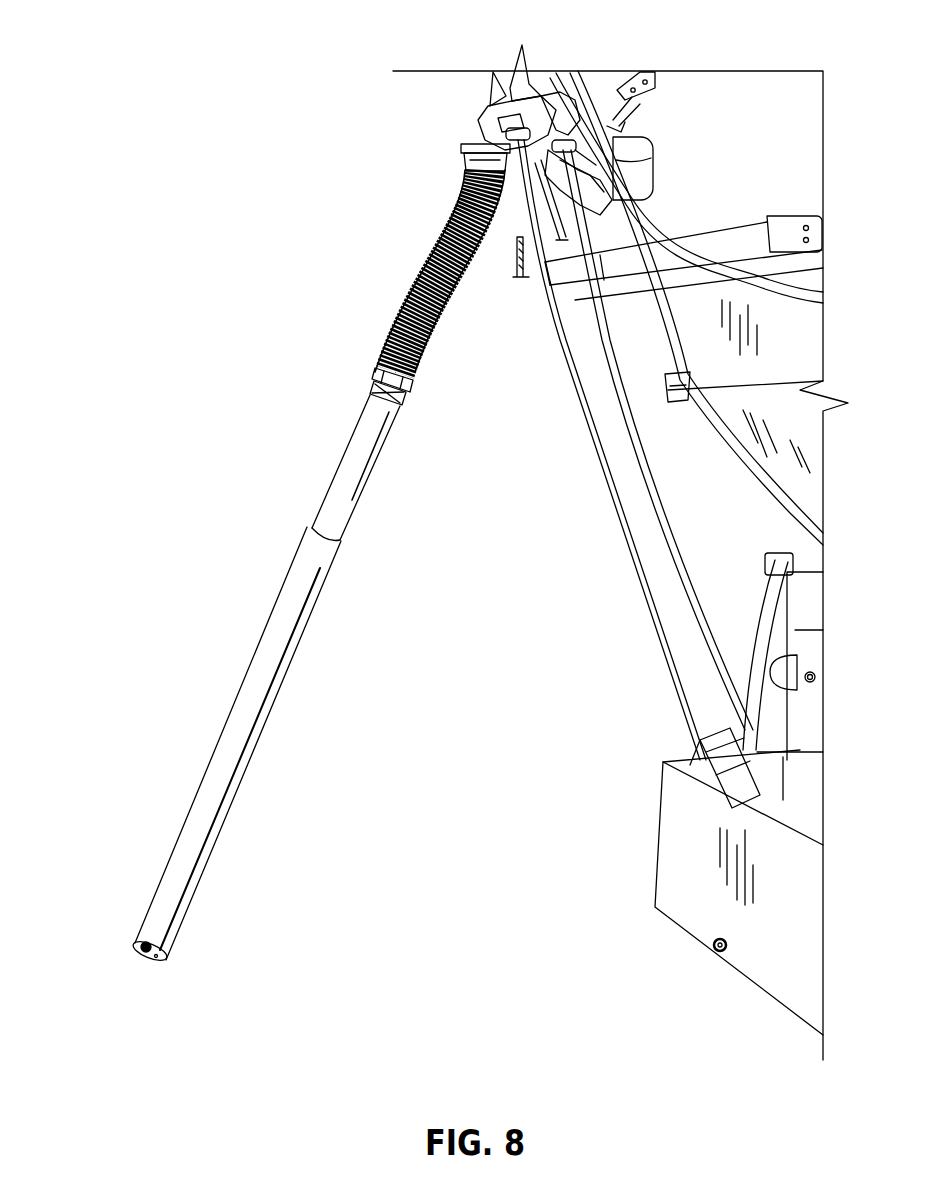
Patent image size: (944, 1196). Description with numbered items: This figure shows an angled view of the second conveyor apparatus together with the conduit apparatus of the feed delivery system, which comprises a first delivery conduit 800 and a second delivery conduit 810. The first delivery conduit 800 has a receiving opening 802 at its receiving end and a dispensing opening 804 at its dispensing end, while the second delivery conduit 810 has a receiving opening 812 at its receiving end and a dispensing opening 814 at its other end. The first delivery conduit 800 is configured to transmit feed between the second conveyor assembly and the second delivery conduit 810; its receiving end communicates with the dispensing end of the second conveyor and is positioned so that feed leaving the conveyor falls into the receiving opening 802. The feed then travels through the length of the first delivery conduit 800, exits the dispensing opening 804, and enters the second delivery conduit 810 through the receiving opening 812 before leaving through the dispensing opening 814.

The first delivery conduit 800 is at (405, 298).
The receiving opening 802 is at (462, 167).
The dispensing opening 804 is at (364, 362).
The receiving opening 812 is at (360, 373).
The second delivery conduit 810 is at (275, 626).
The dispensing opening 814 is at (126, 925).